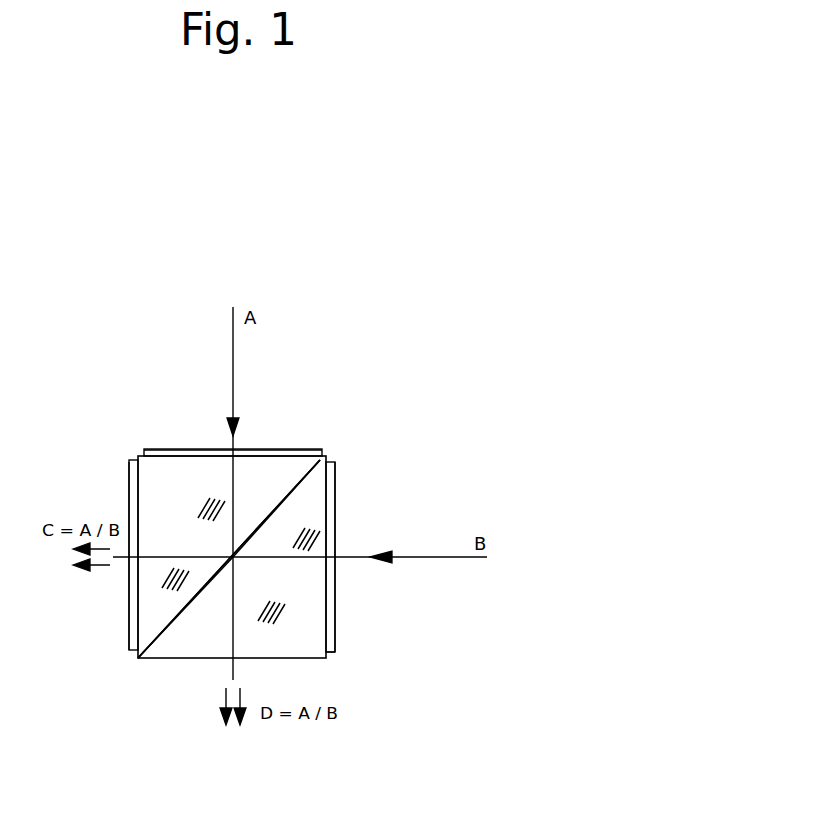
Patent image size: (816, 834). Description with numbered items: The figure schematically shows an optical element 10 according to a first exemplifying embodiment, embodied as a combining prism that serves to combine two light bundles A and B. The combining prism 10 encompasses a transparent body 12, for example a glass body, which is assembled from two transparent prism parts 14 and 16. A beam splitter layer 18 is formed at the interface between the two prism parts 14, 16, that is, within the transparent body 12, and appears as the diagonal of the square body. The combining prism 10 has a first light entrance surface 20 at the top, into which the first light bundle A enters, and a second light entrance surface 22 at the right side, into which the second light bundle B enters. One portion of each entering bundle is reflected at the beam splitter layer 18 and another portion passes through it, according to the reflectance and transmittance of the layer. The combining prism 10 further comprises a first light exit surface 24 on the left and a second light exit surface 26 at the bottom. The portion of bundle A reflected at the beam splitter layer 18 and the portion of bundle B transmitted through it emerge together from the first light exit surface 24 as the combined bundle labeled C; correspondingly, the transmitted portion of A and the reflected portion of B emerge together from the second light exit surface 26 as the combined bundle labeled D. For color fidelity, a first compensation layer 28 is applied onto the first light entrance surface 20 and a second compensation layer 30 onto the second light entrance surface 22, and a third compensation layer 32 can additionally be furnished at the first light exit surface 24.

The optical element 10 is at (356, 298).
The transparent body 12 is at (152, 661).
The first prism part 14 is at (163, 650).
The second prism part 16 is at (302, 464).
The beam splitter layer 18 is at (278, 506).
The first light entrance surface 20 is at (280, 450).
The second light entrance surface 22 is at (335, 608).
The first light exit surface 24 is at (128, 462).
The second light exit surface 26 is at (320, 659).
The first compensation layer 28 is at (193, 450).
The second compensation layer 30 is at (335, 525).
The third compensation layer 32 is at (130, 490).